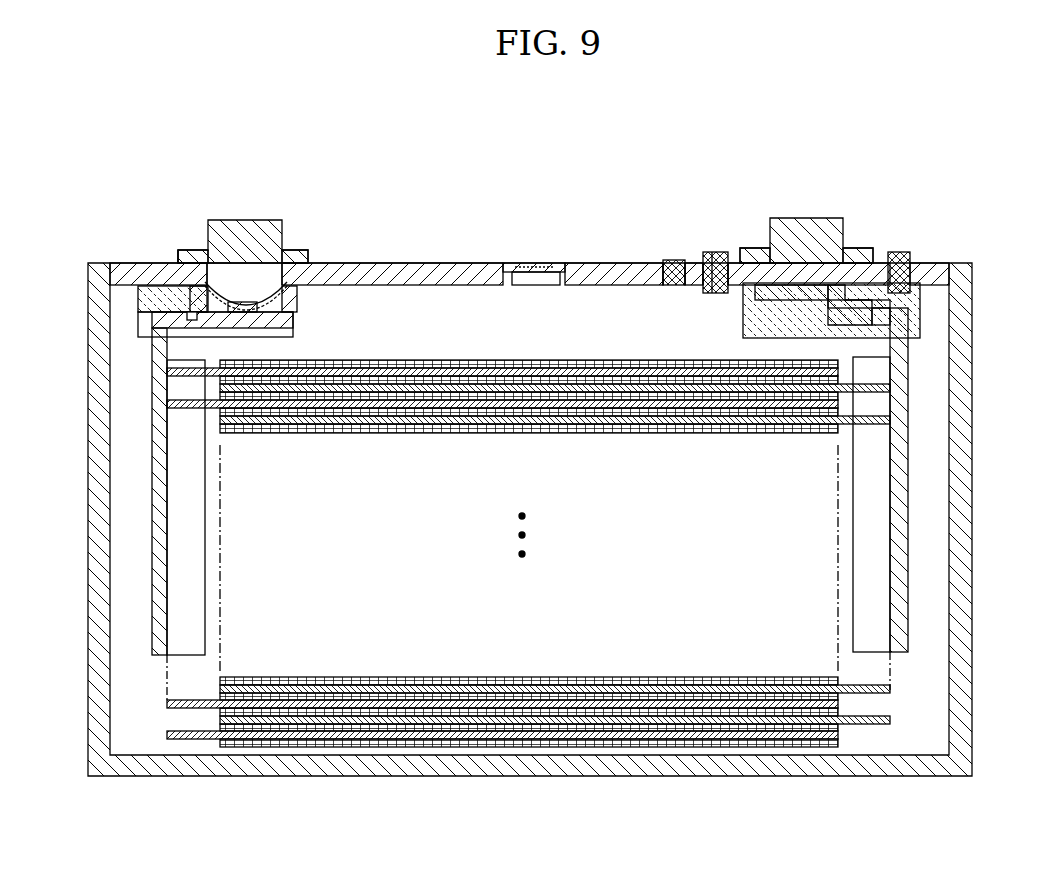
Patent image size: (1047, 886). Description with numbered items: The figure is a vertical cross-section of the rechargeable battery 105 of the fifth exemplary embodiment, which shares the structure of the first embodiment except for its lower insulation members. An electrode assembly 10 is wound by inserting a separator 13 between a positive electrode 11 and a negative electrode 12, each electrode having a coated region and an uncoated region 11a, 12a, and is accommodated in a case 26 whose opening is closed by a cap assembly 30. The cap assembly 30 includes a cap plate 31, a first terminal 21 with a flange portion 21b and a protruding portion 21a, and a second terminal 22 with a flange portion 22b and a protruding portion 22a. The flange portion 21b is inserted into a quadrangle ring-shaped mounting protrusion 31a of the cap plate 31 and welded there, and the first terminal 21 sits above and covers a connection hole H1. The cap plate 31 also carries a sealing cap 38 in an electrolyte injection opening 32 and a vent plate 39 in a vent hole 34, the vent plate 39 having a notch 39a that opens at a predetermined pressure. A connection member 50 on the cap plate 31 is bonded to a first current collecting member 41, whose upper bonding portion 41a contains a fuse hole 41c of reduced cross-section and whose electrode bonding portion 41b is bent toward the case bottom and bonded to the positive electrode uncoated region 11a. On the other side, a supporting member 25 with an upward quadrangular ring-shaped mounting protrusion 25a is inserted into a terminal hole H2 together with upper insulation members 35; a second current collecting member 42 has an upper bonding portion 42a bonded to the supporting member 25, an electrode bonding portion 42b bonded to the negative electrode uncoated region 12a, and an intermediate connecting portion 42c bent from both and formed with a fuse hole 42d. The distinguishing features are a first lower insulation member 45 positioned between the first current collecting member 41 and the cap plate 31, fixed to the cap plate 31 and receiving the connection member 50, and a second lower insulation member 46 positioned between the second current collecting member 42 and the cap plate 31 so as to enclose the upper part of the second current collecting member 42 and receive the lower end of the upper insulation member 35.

The rechargeable battery 105 is at (548, 103).
The electrode assembly 10 is at (531, 596).
The positive electrode 11 is at (502, 600).
The positive electrode uncoated region 11a is at (187, 740).
The negative electrode 12 is at (558, 608).
The negative electrode uncoated region 12a is at (873, 724).
The separator 13 is at (525, 740).
The first terminal 21 is at (239, 200).
The protruding portion 21a is at (195, 251).
The flange portion 21b is at (179, 256).
The second terminal 22 is at (806, 208).
The protruding portion 22a is at (756, 250).
The flange portion 22b is at (852, 250).
The supporting member 25 is at (880, 254).
The mounting protrusion 25a is at (740, 256).
The case 26 is at (960, 552).
The cap assembly 30 is at (534, 260).
The cap plate 31 is at (927, 268).
The mounting protrusion 31a is at (302, 252).
The electrolyte injection opening 32 is at (665, 287).
The vent hole 34 is at (534, 286).
The upper insulation member 35 is at (902, 250).
The sealing cap 38 is at (676, 260).
The vent plate 39 is at (548, 270).
The notch 39a is at (535, 263).
The first current collecting member 41 is at (196, 483).
The upper bonding portion 41a is at (275, 330).
The electrode bonding portion 41b is at (157, 512).
The fuse hole 41c is at (190, 322).
The second current collecting member 42 is at (900, 468).
The upper bonding portion 42a is at (793, 300).
The electrode bonding portion 42b is at (905, 512).
The intermediate connecting portion 42c is at (908, 377).
The fuse hole 42d is at (908, 350).
The first lower insulation member 45 is at (138, 304).
The second lower insulation member 46 is at (920, 303).
The connection member 50 is at (293, 300).
The connection hole H1 is at (268, 272).
The terminal hole H2 is at (718, 259).